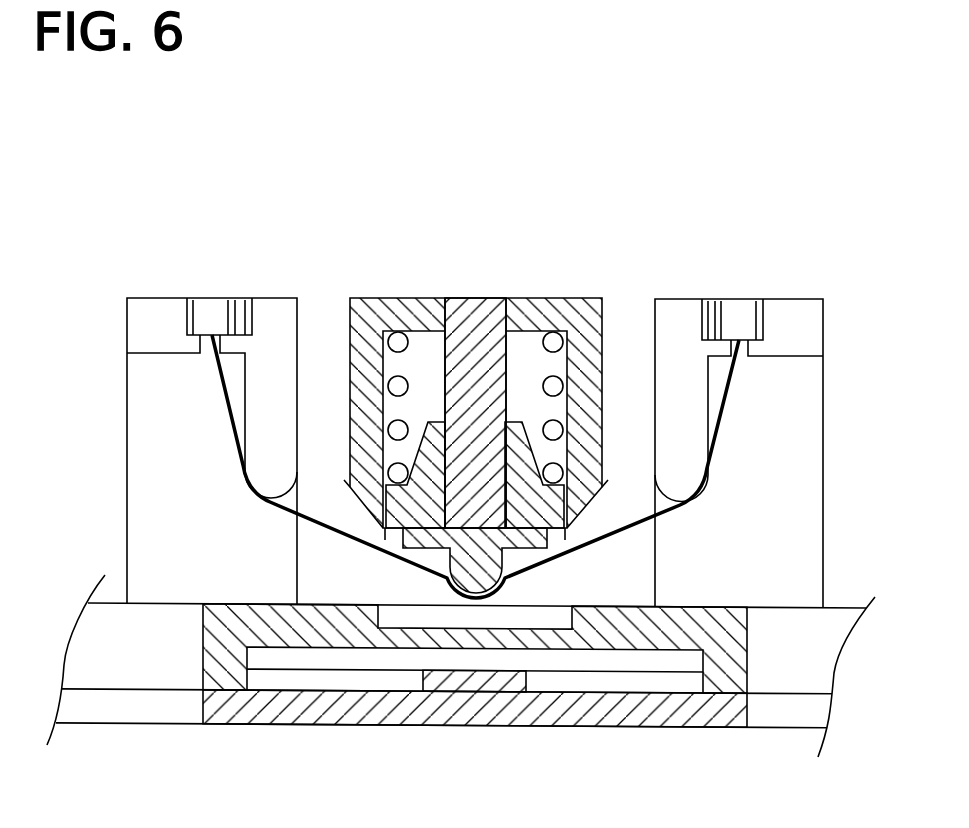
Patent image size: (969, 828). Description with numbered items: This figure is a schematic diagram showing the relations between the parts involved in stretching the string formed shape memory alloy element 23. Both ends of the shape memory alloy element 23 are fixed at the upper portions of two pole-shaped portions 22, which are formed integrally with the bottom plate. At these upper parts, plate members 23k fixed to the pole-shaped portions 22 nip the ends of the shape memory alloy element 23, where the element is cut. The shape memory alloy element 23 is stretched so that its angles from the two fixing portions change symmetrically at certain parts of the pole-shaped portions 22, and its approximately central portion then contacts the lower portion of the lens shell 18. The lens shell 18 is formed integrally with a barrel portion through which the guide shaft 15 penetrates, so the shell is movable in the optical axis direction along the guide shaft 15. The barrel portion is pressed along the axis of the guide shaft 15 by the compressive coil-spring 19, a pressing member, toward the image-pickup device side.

The guide shaft 15 is at (488, 298).
The lens shell 18 is at (530, 507).
The compressive coil-spring 19 is at (388, 382).
The pole-shaped portion 22 is at (160, 308).
The shape memory alloy element 23 is at (330, 530).
The plate member 23k is at (211, 312).